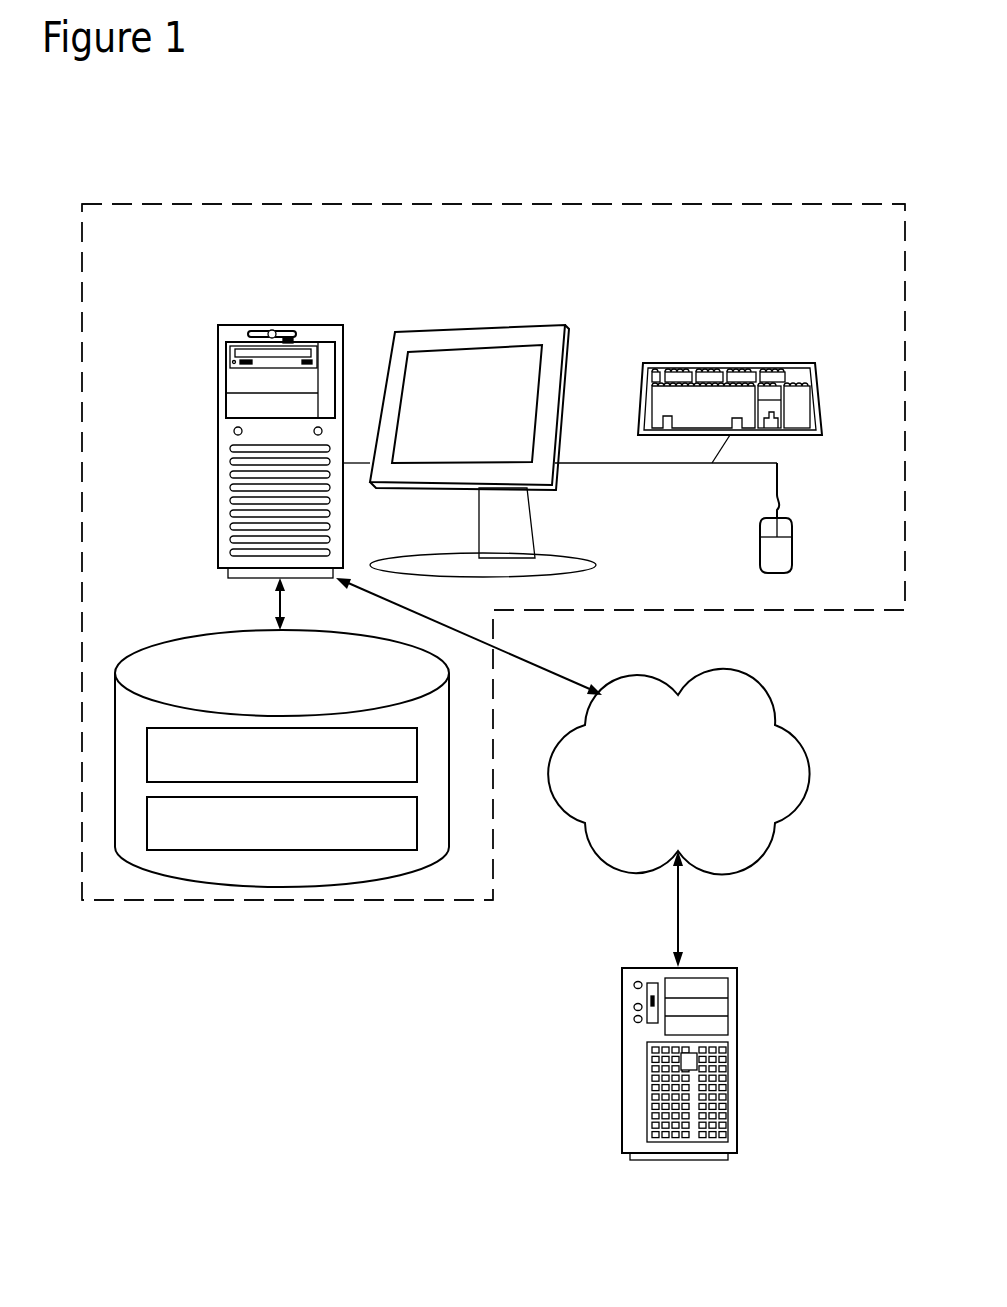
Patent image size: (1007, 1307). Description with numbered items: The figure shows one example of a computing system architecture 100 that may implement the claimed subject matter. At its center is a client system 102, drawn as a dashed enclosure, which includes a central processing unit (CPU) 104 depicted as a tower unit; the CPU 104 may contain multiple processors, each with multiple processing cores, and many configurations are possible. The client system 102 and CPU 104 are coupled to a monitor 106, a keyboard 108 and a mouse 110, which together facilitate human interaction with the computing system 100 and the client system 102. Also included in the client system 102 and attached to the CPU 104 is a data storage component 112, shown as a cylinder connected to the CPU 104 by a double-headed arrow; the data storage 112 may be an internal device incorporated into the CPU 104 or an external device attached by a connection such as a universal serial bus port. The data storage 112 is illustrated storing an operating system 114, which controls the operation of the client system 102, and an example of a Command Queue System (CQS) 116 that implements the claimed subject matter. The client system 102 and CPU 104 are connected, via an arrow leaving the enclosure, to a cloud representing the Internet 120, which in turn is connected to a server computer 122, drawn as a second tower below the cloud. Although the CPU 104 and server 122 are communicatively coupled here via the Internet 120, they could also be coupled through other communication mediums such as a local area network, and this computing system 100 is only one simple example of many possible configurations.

The computing system architecture 100 is at (562, 161).
The client system 102 is at (170, 298).
The central processing unit (CPU) 104 is at (328, 326).
The monitor 106 is at (557, 402).
The keyboard 108 is at (792, 378).
The mouse 110 is at (777, 575).
The data storage component 112 is at (298, 701).
The operating system 114 is at (317, 766).
The Command Queue System (CQS) 116 is at (323, 835).
The Internet 120 is at (695, 796).
The server computer 122 is at (737, 1063).